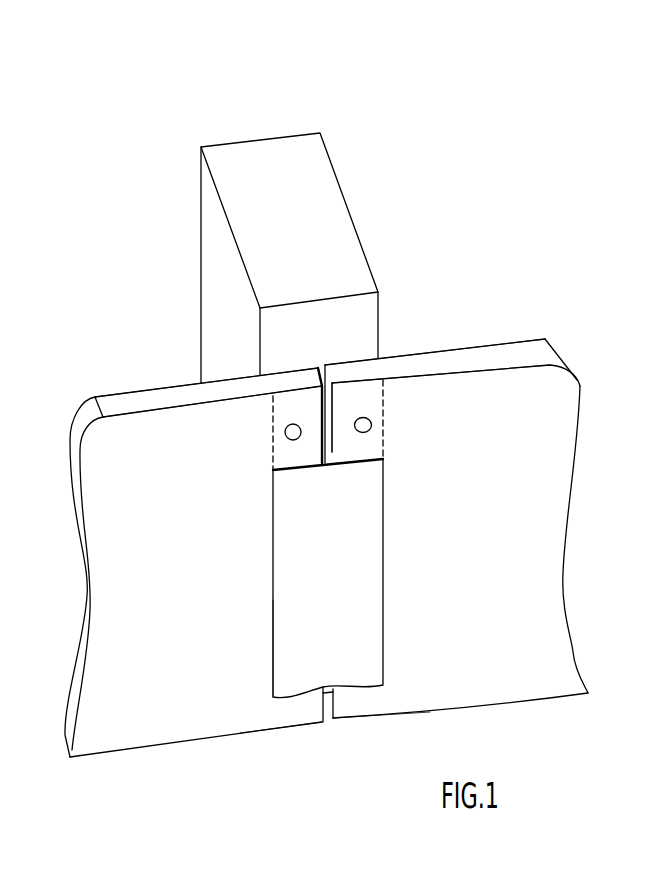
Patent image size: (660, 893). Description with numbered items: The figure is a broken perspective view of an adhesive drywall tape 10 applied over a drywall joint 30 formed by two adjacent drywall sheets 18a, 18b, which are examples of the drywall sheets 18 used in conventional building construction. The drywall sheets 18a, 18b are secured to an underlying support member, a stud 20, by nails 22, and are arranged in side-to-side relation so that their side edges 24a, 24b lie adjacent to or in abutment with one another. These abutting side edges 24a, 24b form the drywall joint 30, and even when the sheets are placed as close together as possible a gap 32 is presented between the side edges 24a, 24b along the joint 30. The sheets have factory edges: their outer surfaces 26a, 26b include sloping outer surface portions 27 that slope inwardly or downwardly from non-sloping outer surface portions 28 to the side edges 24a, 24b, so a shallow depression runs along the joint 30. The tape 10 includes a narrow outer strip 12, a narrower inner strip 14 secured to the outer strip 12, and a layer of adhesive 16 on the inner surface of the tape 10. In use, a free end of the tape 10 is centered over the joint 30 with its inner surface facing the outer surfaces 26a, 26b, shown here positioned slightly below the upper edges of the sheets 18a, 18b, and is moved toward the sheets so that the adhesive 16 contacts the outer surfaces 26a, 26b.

The adhesive drywall tape 10 is at (270, 665).
The outer strip 12 is at (388, 522).
The inner strip 14 is at (310, 459).
The adhesive 16 is at (347, 456).
The drywall sheets 18 is at (103, 395).
The first drywall sheet 18a is at (85, 594).
The second drywall sheet 18b is at (543, 698).
The stud 20 is at (247, 133).
The nails 22 is at (289, 414).
The side edge of first drywall sheet 24a is at (335, 695).
The side edge of second drywall sheet 24b is at (322, 706).
The outer surface of first drywall sheet 26a is at (207, 628).
The outer surface of second drywall sheet 26b is at (461, 580).
The sloping outer surface portions 27 is at (345, 363).
The non-sloping outer surface portions 28 is at (152, 409).
The drywall joint 30 is at (334, 408).
The gap 32 is at (328, 722).